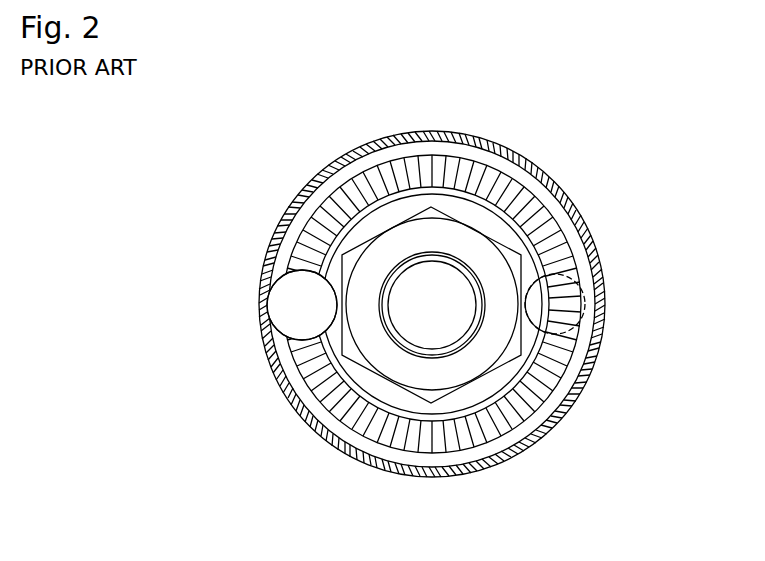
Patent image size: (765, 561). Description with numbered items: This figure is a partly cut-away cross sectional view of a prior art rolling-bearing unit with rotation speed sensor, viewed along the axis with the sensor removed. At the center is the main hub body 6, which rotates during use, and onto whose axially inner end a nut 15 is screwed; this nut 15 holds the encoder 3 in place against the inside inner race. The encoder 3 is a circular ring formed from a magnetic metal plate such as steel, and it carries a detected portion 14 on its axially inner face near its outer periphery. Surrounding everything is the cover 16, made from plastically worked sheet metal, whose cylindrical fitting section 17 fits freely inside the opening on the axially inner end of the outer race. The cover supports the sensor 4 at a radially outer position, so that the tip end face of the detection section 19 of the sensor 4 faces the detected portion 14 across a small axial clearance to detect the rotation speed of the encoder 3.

The encoder 3 is at (532, 392).
The sensor 4 is at (281, 291).
The main hub body 6 is at (452, 285).
The detected portion 14 is at (500, 425).
The nut 15 is at (397, 363).
The cover 16 is at (330, 165).
The cylindrical fitting section 17 is at (470, 133).
The detection section 19 is at (281, 318).